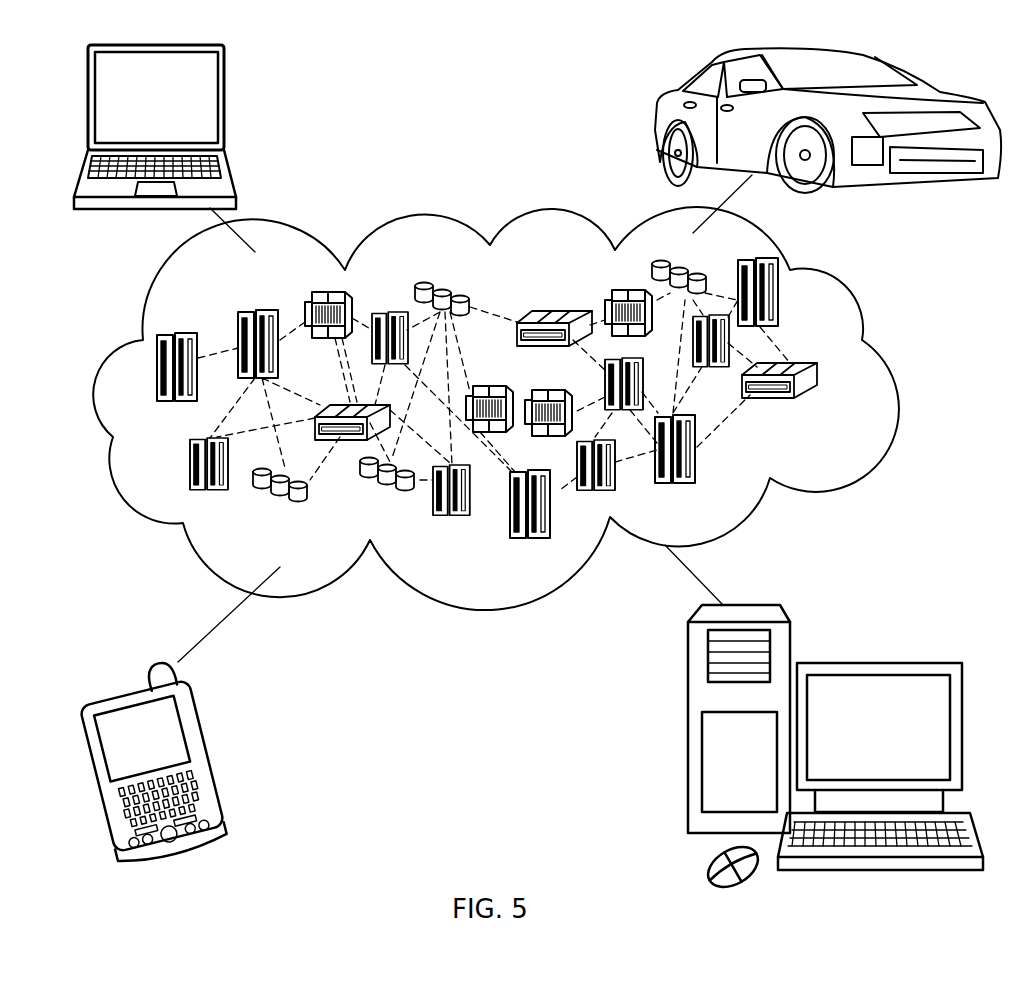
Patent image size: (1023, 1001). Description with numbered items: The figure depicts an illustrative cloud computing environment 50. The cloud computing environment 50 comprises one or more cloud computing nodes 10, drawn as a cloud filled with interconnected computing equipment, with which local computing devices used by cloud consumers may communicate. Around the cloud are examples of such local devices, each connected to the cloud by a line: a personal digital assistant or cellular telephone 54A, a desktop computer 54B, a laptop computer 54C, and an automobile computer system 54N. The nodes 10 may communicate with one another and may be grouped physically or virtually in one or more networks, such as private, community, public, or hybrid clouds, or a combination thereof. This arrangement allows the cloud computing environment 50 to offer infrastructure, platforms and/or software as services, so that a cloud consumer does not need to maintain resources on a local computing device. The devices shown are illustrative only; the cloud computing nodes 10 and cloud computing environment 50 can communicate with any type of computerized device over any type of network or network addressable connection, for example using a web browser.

The cloud computing node 10 is at (818, 407).
The cloud computing environment 50 is at (515, 408).
The personal digital assistant or cellular telephone 54A is at (213, 757).
The desktop computer 54B is at (875, 662).
The laptop computer 54C is at (224, 106).
The automobile computer system 54N is at (660, 118).